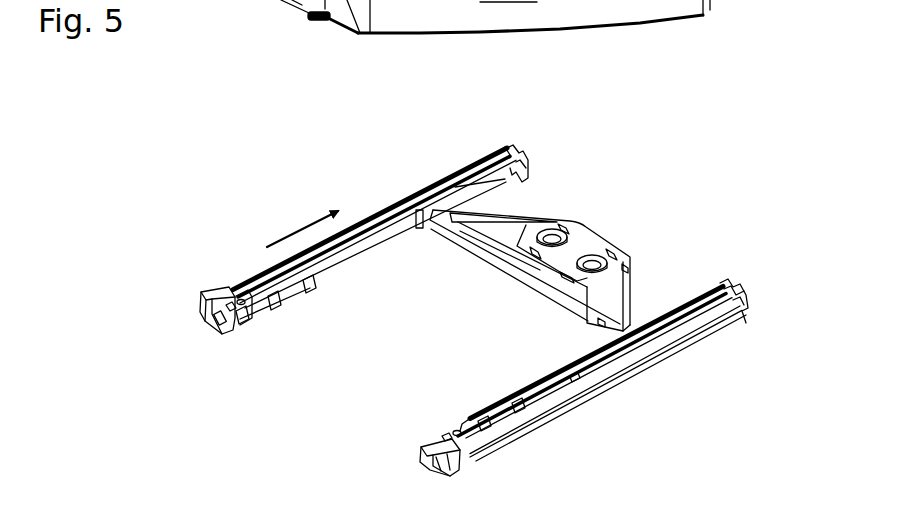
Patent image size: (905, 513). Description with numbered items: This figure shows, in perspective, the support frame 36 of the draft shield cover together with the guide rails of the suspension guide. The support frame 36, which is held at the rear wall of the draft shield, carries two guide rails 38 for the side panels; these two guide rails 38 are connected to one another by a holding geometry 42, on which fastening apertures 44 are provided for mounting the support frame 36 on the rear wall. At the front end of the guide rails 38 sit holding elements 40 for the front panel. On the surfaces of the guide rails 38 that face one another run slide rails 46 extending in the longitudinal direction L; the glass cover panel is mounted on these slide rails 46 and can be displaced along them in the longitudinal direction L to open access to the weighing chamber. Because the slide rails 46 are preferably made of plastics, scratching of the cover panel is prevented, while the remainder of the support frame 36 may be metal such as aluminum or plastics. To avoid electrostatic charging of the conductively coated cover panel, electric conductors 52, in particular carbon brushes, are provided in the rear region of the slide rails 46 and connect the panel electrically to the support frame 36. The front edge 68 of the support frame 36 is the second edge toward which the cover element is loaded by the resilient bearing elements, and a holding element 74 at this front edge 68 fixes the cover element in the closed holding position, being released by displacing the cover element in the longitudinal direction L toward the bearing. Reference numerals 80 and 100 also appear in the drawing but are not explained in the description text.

The support frame 36 is at (726, 152).
The guide rails 38 is at (389, 208).
The holding elements 40 is at (213, 291).
The holding geometry 42 is at (530, 279).
The fastening apertures 44 is at (548, 238).
The slide rails 46 is at (320, 277).
The electric conductors 52 is at (420, 228).
The front edge of the support frame 68 is at (220, 339).
The holding element 74 is at (232, 306).
The sensor head 80 is at (277, 0).
The detector device 100 is at (205, 0).